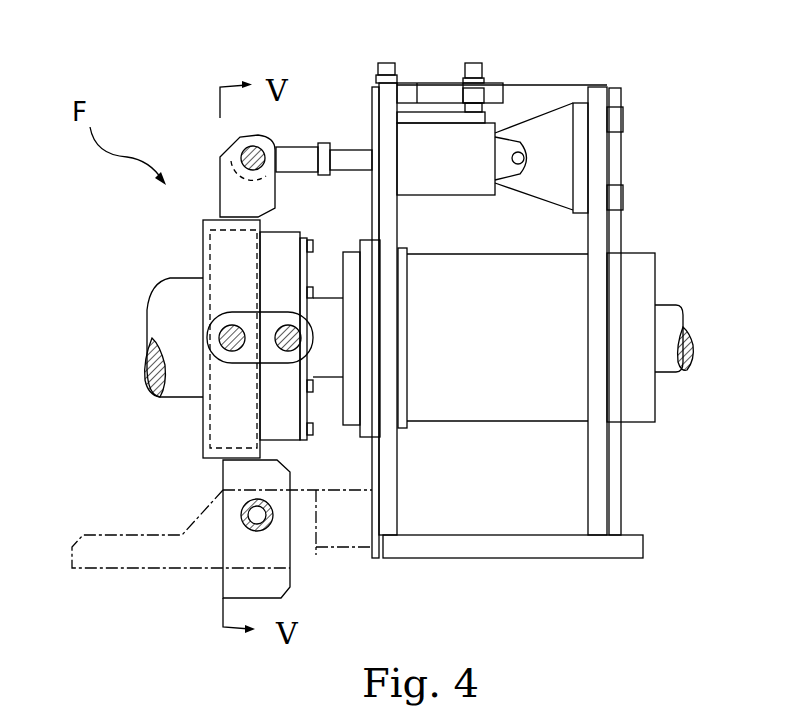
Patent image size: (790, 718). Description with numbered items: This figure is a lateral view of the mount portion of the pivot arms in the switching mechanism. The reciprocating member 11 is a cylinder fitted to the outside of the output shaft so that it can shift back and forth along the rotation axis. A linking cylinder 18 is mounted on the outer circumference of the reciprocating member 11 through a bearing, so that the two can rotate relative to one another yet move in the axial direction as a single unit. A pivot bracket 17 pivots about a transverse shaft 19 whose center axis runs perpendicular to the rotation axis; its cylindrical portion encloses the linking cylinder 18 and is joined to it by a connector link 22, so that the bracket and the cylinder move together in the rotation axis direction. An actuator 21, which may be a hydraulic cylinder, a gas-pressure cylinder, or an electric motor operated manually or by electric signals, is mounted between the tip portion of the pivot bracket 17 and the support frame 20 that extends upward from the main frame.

The reciprocating member 11 is at (170, 282).
The pivot bracket 17 is at (225, 180).
The linking cylinder 18 is at (288, 235).
The transverse shaft 19 is at (273, 520).
The support frame 20 is at (547, 92).
The actuator 21 is at (445, 177).
The connector link 22 is at (248, 358).